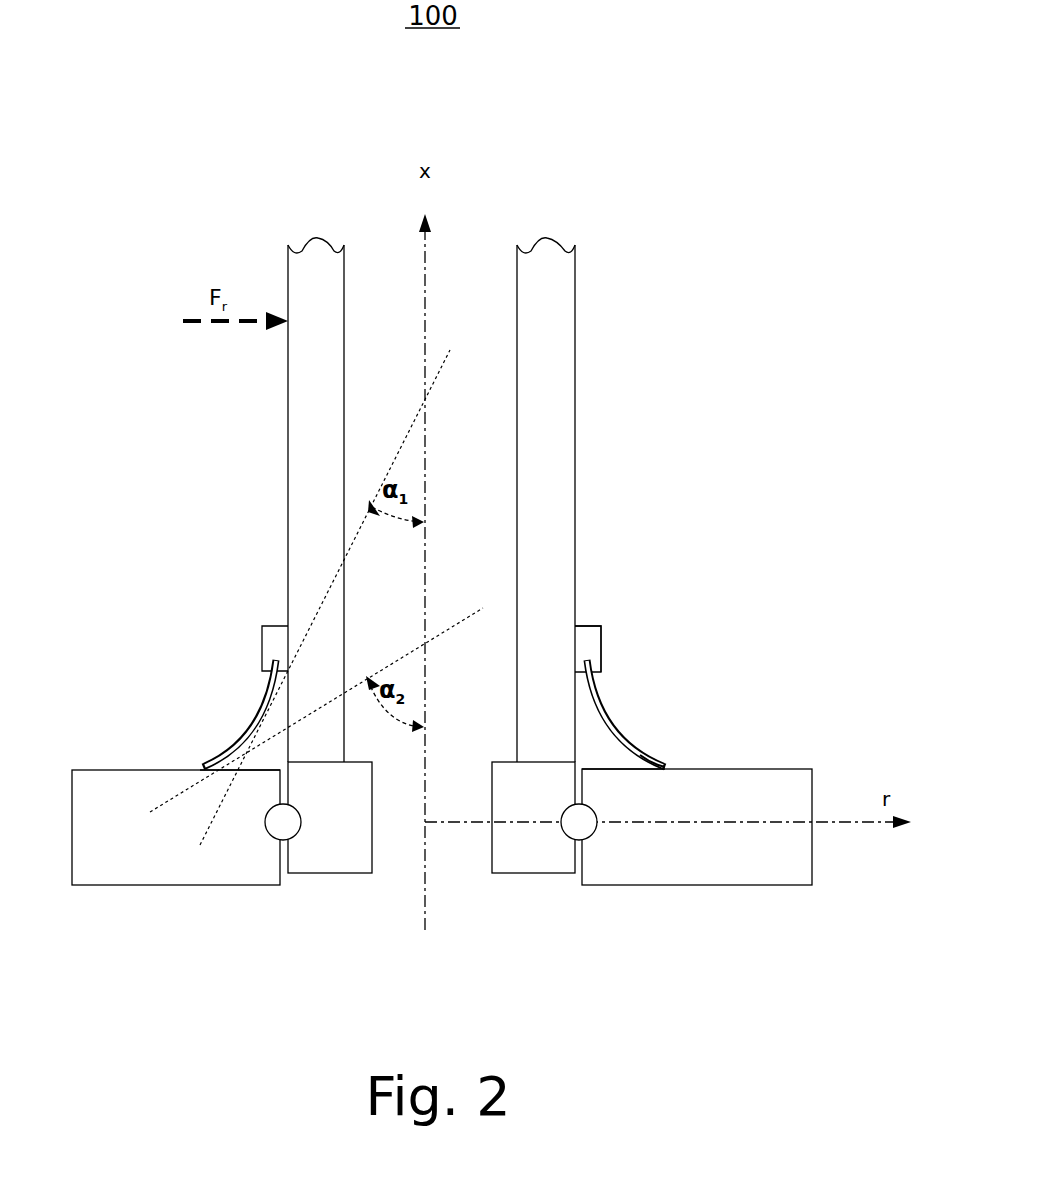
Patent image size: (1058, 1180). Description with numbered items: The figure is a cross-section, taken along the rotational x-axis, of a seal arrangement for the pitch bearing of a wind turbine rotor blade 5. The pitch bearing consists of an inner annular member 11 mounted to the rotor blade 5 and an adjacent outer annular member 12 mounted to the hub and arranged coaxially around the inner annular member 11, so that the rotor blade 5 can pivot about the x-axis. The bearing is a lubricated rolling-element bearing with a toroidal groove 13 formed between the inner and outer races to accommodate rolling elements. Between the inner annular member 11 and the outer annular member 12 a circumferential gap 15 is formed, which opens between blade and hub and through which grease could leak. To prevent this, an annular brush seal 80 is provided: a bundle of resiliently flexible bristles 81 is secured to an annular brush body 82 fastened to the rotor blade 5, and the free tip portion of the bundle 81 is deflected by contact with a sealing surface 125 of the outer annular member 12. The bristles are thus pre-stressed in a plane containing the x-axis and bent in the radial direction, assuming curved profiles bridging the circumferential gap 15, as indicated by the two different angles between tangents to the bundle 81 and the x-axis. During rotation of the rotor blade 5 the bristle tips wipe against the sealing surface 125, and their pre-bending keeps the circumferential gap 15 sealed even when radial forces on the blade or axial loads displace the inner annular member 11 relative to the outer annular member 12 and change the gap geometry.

The rotor blade 5 is at (315, 517).
The inner annular member 11 is at (355, 855).
The outer annular member 12 is at (155, 852).
The toroidal groove 13 is at (283, 840).
The circumferential gap 15 is at (280, 767).
The brush seal 80 is at (608, 641).
The bundle of resiliently flexible bristles 81 is at (255, 705).
The annular brush body 82 is at (262, 625).
The sealing surface 125 is at (637, 762).